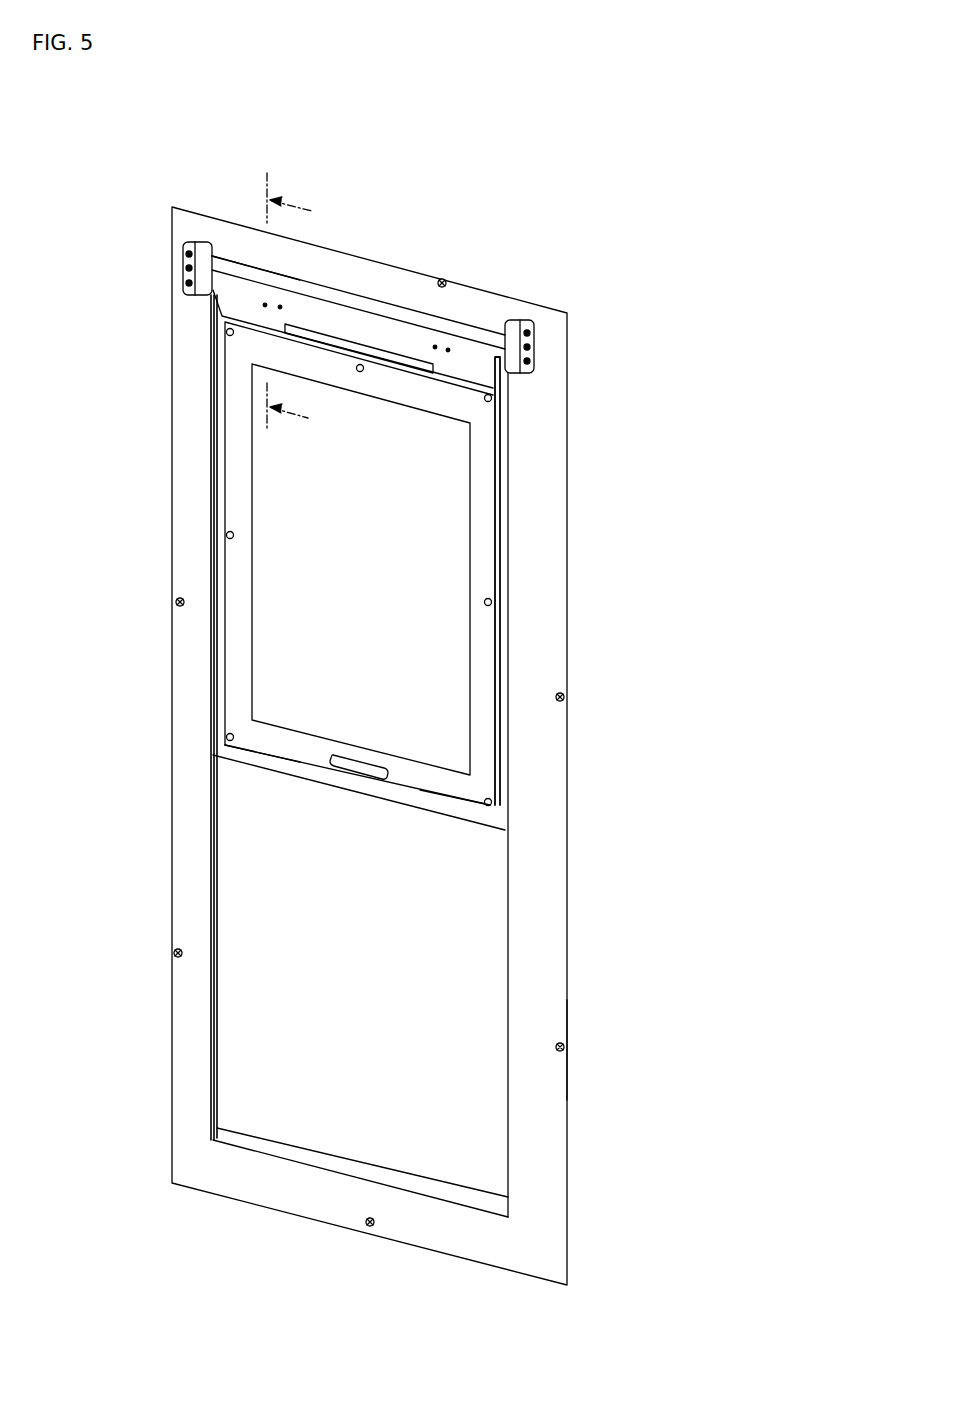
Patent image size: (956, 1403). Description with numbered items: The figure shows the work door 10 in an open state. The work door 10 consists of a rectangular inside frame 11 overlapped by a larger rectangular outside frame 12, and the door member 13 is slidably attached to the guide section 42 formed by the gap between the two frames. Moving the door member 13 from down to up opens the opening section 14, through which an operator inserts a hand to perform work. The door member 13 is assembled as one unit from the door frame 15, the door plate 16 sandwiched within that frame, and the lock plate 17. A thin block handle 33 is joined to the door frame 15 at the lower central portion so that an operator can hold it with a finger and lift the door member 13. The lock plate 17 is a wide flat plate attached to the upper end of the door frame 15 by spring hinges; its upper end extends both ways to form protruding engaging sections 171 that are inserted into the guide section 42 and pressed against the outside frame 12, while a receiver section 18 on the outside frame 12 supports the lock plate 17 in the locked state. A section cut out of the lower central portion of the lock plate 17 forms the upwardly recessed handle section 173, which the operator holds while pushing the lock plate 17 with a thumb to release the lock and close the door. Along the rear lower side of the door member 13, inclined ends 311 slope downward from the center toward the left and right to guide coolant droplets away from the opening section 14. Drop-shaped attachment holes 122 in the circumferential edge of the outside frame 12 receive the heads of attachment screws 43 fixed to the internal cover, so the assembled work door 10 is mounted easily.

The work door 10 is at (408, 141).
The inside frame 11 is at (238, 1142).
The outside frame 12 is at (185, 1003).
The door member 13 is at (238, 474).
The opening section 14 is at (360, 992).
The door frame 15 is at (481, 557).
The door plate 16 is at (401, 668).
The lock plate 17 is at (403, 338).
The receiver section 18 is at (188, 270).
The handle 33 is at (352, 760).
The guide section 42 is at (218, 1053).
The attachment screw 43 is at (566, 1040).
The attachment hole 122 is at (568, 1050).
The engaging section 171 is at (217, 260).
The handle section 173 is at (353, 345).
The inclined end 311 is at (300, 777).